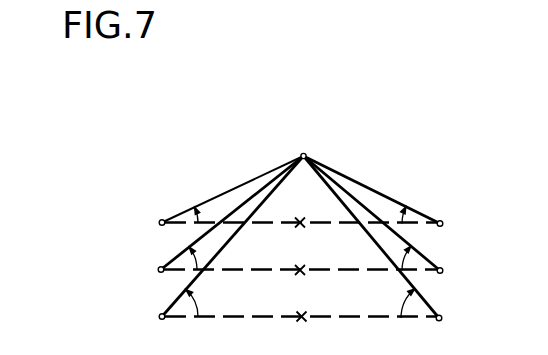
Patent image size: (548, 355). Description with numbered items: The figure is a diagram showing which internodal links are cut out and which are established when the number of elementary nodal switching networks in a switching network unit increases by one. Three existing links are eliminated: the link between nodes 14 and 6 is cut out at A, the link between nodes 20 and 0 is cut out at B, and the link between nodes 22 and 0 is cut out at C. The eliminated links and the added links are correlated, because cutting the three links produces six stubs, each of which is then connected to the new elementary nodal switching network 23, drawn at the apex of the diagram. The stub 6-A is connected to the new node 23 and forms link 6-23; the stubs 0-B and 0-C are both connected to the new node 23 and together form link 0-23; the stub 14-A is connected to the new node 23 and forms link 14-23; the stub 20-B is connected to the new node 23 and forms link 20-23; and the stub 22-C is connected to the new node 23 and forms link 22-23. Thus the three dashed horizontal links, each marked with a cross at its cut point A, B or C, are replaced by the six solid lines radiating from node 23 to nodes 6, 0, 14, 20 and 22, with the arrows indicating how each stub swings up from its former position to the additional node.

The new elementary nodal switching network 23 is at (307, 154).
The elementary nodal switching network 6 is at (159, 222).
The elementary nodal switching network 0 is at (158, 270).
The elementary nodal switching network 14 is at (443, 224).
The elementary nodal switching network 20 is at (443, 270).
The elementary nodal switching network 22 is at (442, 318).
The cut-out point A is at (298, 220).
The cut-out point B is at (298, 267).
The cut-out point C is at (300, 314).